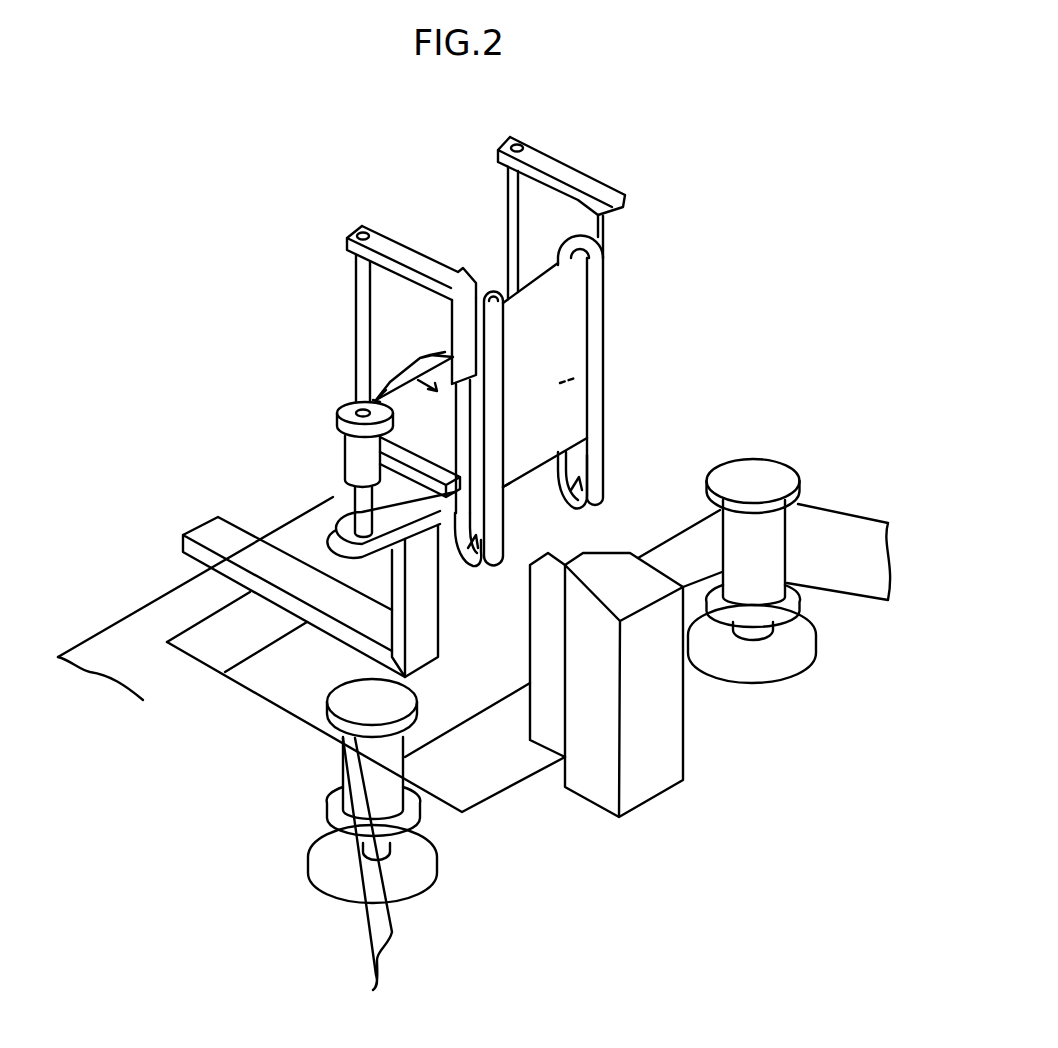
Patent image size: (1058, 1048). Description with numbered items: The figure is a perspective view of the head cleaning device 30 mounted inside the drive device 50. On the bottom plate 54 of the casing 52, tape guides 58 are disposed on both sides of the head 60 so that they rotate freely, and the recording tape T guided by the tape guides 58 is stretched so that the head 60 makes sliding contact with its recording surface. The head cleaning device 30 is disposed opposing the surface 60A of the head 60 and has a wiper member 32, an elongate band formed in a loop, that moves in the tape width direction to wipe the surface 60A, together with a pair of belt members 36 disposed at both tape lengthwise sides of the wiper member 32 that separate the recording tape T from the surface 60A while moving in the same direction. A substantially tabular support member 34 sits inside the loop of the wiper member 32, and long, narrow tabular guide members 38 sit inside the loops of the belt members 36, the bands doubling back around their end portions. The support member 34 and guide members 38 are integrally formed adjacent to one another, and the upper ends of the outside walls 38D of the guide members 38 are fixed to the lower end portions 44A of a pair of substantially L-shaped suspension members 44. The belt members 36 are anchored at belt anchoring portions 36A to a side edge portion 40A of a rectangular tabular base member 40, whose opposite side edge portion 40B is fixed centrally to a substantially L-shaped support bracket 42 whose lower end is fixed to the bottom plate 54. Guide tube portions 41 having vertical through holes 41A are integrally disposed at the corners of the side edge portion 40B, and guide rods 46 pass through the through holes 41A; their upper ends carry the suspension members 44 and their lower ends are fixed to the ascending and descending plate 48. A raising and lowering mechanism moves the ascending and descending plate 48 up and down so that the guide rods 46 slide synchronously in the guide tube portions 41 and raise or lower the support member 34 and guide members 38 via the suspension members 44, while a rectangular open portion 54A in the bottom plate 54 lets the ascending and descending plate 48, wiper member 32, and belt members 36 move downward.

The head cleaning device 30 is at (596, 170).
The wiper member 32 is at (550, 348).
The support member 34 is at (560, 388).
The belt members 36 is at (492, 313).
The belt anchoring portions 36A is at (442, 460).
The guide members 38 is at (477, 563).
The outside walls 38D is at (380, 401).
The base member 40 is at (405, 365).
The side edge portion 40A is at (506, 483).
The side edge portion 40B is at (390, 385).
The guide tube portions 41 is at (345, 448).
The through holes 41A is at (340, 413).
The support bracket 42 is at (227, 545).
The suspension members 44 is at (558, 170).
The end portions 44A is at (458, 357).
The guide rods 46 is at (515, 198).
The ascending and descending plate 48 is at (343, 556).
The drive device 50 is at (202, 410).
The casing 52 is at (80, 627).
The bottom plate 54 is at (125, 633).
The open portion 54A is at (205, 635).
The tape guides 58 is at (765, 457).
The head 60 is at (648, 775).
The surface 60A is at (548, 545).
The recording tape T is at (845, 517).